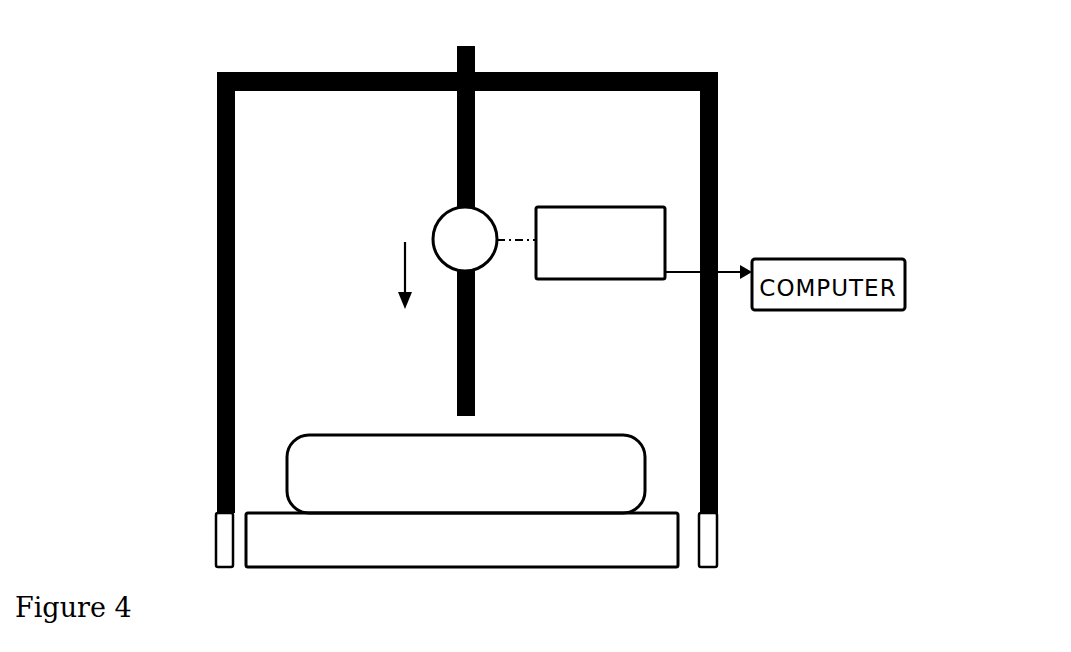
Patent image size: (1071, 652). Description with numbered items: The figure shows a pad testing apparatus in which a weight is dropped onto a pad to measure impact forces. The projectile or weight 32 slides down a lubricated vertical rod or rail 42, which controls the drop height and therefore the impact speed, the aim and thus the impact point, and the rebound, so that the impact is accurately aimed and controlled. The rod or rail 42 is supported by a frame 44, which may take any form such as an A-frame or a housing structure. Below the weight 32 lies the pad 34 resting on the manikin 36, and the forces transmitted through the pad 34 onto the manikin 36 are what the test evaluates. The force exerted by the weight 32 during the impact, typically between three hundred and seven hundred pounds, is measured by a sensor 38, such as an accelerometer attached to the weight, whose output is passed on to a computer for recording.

The projectile or weight 32 is at (441, 222).
The pad 34 is at (635, 435).
The manikin 36 is at (598, 560).
The sensor 38 is at (615, 280).
The vertical rod or rail 42 is at (475, 160).
The frame 44 is at (718, 162).